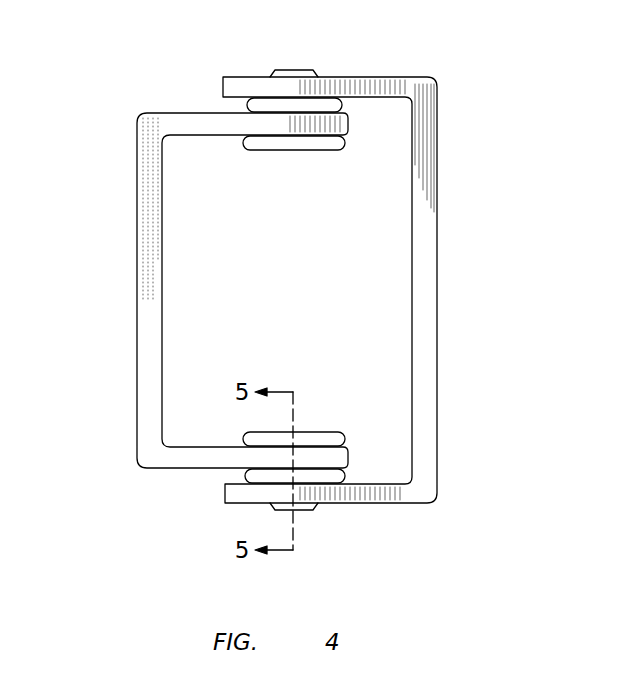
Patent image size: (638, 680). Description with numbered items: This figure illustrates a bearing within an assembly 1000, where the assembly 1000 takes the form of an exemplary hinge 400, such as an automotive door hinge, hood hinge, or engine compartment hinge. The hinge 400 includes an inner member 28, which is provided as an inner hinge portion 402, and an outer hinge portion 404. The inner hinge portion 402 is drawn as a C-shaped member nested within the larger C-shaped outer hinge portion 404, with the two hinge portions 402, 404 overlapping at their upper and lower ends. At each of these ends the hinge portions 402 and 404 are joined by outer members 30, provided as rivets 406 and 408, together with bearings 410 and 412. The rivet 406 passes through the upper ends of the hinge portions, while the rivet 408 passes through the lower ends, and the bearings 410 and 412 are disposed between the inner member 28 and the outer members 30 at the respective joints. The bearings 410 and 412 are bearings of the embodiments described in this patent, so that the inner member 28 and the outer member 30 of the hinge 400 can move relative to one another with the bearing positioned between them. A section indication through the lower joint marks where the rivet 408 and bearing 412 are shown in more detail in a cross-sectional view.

The assembly 1000 is at (451, 57).
The hinge 400 is at (450, 147).
The outer hinge portion 404 is at (437, 268).
The outer member 30 is at (191, 290).
The inner hinge portion 402 is at (137, 208).
The bearing 410 is at (247, 105).
The bearing 412 is at (245, 475).
The rivet 406 is at (290, 70).
The inner member 28 is at (221, 521).
The rivet 408 is at (268, 507).